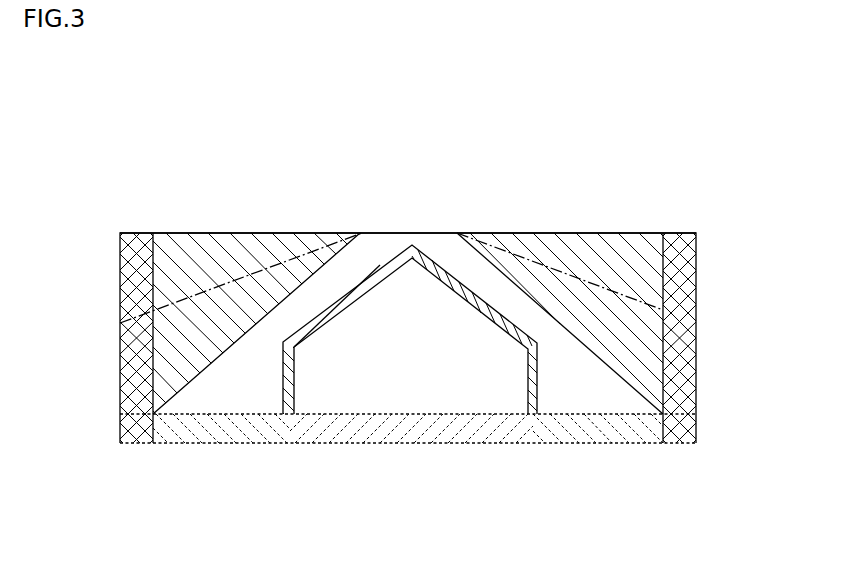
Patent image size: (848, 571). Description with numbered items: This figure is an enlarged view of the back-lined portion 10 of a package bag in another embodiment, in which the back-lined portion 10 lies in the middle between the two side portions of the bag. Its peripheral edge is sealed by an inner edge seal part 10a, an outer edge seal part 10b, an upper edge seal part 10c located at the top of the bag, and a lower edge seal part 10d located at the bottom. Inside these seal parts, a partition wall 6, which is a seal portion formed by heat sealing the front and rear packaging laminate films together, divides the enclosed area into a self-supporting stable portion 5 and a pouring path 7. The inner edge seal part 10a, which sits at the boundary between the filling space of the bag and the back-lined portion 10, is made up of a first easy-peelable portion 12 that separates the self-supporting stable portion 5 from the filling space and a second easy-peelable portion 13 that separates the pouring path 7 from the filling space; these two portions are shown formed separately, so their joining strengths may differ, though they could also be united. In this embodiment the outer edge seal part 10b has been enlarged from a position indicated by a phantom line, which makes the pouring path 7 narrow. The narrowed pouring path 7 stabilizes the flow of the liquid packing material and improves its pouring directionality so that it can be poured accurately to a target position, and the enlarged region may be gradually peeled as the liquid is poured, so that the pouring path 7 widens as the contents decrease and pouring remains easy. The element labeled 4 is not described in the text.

The top surface 4 is at (432, 232).
The self-supporting stable portion 5 is at (385, 390).
The partition wall 6 is at (468, 285).
The pouring path 7 is at (230, 387).
The back-lined portion 10 is at (112, 229).
The inner edge seal part 10a is at (328, 443).
The outer edge seal part 10b is at (190, 255).
The upper edge seal part 10c is at (672, 278).
The lower edge seal part 10d is at (143, 378).
The first easy-peelable portion 12 is at (458, 433).
The second easy-peelable portion 13 is at (172, 430).